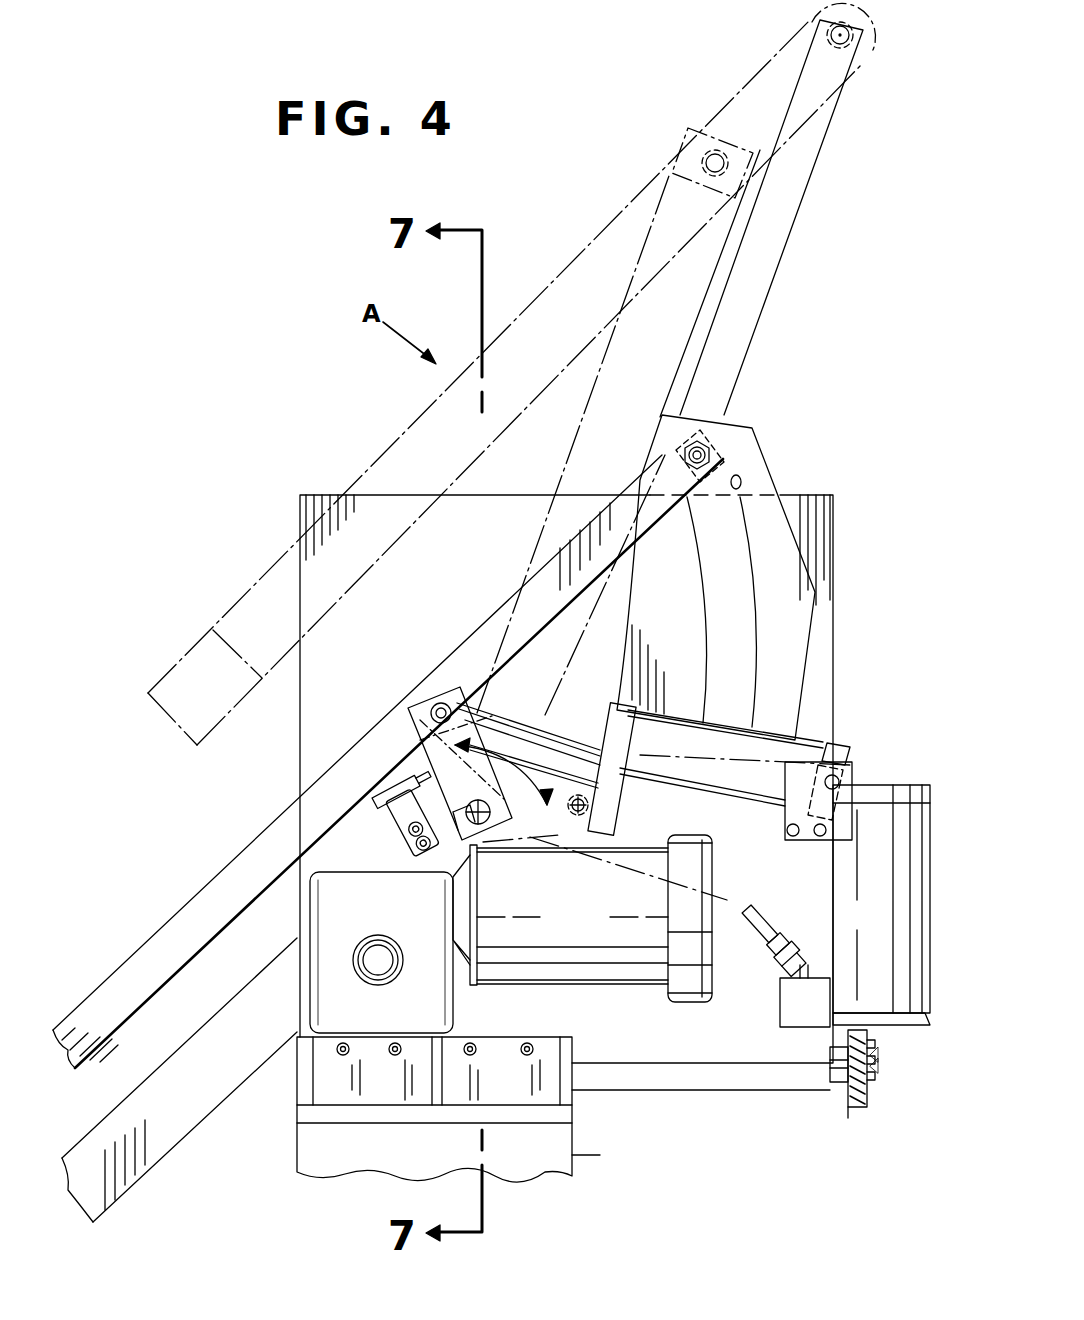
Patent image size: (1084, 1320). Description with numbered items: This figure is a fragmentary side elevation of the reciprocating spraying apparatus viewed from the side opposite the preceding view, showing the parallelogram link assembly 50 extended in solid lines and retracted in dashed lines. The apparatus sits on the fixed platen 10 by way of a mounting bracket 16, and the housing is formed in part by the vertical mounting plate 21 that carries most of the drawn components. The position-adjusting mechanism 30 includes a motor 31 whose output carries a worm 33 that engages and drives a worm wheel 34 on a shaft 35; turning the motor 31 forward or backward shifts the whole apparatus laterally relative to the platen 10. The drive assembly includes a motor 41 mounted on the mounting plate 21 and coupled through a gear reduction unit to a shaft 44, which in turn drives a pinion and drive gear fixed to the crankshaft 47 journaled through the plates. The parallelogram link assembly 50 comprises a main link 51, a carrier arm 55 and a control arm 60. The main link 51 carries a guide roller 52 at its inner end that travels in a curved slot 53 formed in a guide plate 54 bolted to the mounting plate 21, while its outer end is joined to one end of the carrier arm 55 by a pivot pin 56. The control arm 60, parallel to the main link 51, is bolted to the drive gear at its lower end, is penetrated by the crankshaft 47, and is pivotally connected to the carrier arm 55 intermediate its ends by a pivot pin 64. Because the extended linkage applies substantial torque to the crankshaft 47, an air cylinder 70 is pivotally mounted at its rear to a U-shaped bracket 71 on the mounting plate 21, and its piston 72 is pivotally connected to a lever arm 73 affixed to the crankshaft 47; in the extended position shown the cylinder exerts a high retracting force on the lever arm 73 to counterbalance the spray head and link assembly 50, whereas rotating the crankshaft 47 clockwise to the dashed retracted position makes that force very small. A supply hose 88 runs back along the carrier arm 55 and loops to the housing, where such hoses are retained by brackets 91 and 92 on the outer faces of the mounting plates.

The fixed platen 10 is at (586, 1162).
The mounting bracket 16 is at (296, 1089).
The mounting plate 21 is at (566, 825).
The position-adjusting mechanism 30 is at (855, 1122).
The motor 31 is at (881, 905).
The worm 33 is at (870, 1068).
The worm wheel 34 is at (860, 1100).
The shaft 35 is at (845, 1084).
The motor 41 is at (582, 918).
The shaft 44 is at (370, 977).
The crankshaft 47 is at (490, 826).
The parallelogram link assembly 50 is at (580, 177).
The main link 51 is at (186, 906).
The guide roller 52 is at (714, 455).
The curved slot 53 is at (741, 484).
The guide plate 54 is at (752, 430).
The carrier arm 55 is at (372, 460).
The pivot pin 56 is at (850, 48).
The control arm 60 is at (131, 1176).
The pivot pin 64 is at (707, 152).
The air cylinder 70 is at (666, 801).
The U-shaped bracket 71 is at (850, 762).
The piston 72 is at (520, 727).
The lever arm 73 is at (413, 722).
The hose 88 is at (763, 912).
The bracket 91 is at (790, 1003).
The bracket 92 is at (396, 842).